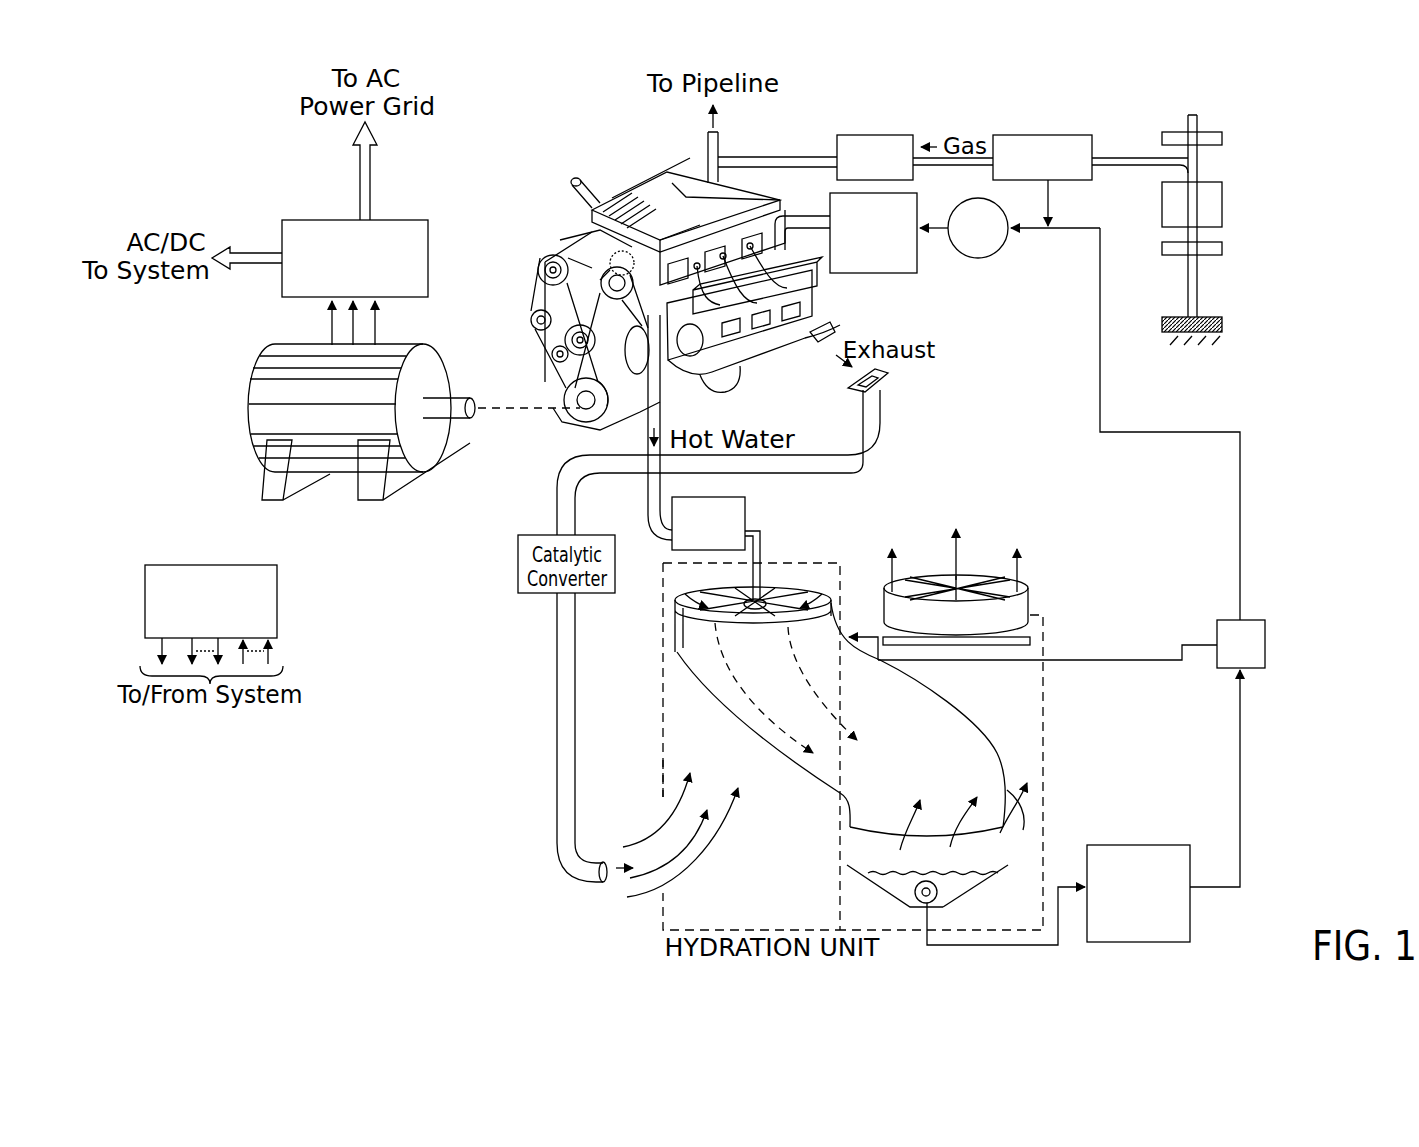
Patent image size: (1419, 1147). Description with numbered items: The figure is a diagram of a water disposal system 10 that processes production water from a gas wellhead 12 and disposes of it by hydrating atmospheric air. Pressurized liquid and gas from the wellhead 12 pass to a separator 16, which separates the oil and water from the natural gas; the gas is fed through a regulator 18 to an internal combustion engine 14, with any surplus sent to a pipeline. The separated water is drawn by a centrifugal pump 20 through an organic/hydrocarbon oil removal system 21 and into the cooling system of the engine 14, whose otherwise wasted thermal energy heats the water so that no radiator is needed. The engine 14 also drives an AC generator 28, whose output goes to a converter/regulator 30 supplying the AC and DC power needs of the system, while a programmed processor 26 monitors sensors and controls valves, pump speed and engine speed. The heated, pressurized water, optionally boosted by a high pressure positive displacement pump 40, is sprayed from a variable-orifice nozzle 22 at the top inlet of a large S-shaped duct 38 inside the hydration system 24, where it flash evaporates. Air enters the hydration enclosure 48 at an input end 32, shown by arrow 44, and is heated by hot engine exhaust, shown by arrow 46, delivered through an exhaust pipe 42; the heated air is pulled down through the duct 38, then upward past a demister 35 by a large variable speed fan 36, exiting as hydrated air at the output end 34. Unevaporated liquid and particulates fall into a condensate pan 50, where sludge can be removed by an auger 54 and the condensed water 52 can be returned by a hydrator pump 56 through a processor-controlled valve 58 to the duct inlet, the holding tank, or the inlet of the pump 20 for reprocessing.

The water disposal system 10 is at (518, 142).
The gas wellhead 12 is at (1224, 138).
The internal combustion engine 14 is at (570, 208).
The separator 16 is at (1048, 134).
The regulator 18 is at (857, 134).
The pump 20 is at (981, 258).
The organic/hydrocarbon oil removal system 21 is at (873, 273).
The nozzle 22 is at (762, 591).
The hydration system 24 is at (1046, 734).
The programmed processor 26 is at (210, 564).
The AC generator 28 is at (248, 376).
The converter/regulator 30 is at (303, 218).
The input end 32 is at (661, 781).
The output end 34 is at (974, 541).
The demister 35 is at (1040, 638).
The variable speed fan 36 is at (1005, 587).
The S-shaped duct 38 is at (950, 701).
The high pressure positive displacement pump 40 is at (745, 521).
The exhaust pipe 42 is at (557, 672).
The incoming air 44 is at (640, 841).
The hot exhaust fumes 46 is at (613, 874).
The hydration enclosure 48 is at (662, 624).
The condensate pan 50 is at (983, 883).
The condensed water 52 is at (907, 894).
The auger 54 is at (929, 911).
The hydrator pump 56 is at (1137, 845).
The processor-controlled valve 58 is at (1266, 646).